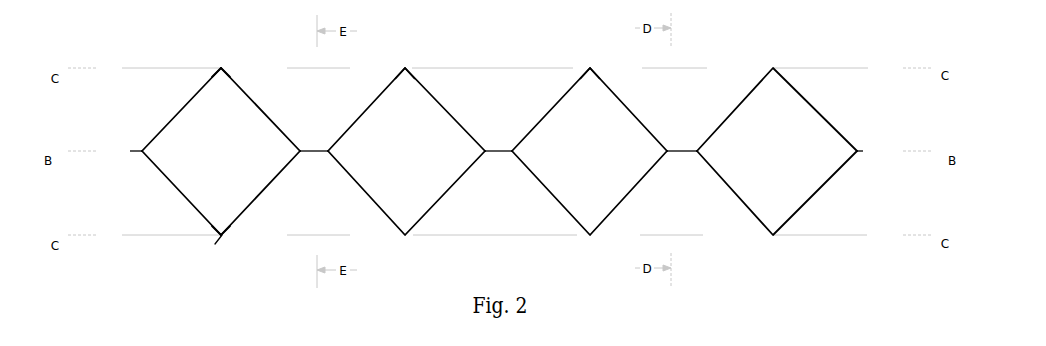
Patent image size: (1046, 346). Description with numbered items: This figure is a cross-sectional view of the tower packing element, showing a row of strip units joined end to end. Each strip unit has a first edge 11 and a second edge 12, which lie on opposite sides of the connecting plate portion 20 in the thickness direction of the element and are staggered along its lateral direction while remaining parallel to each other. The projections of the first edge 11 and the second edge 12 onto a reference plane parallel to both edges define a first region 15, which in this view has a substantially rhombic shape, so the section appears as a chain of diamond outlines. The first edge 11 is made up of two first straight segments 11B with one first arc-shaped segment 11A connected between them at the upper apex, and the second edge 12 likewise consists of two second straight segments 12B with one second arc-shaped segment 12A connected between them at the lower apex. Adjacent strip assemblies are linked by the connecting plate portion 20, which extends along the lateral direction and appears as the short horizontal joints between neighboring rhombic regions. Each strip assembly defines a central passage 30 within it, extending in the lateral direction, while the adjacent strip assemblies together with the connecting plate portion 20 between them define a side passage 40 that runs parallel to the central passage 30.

The first edge 11 is at (499, 98).
The first arc-shaped segment 11A is at (212, 68).
The first straight segments 11B is at (257, 101).
The second edge 12 is at (499, 218).
The second arc-shaped segment 12A is at (210, 249).
The second straight segments 12B is at (173, 188).
The first region 15 is at (499, 165).
The connecting plate portion 20 is at (130, 160).
The central passage 30 is at (398, 97).
The side passage 40 is at (467, 97).